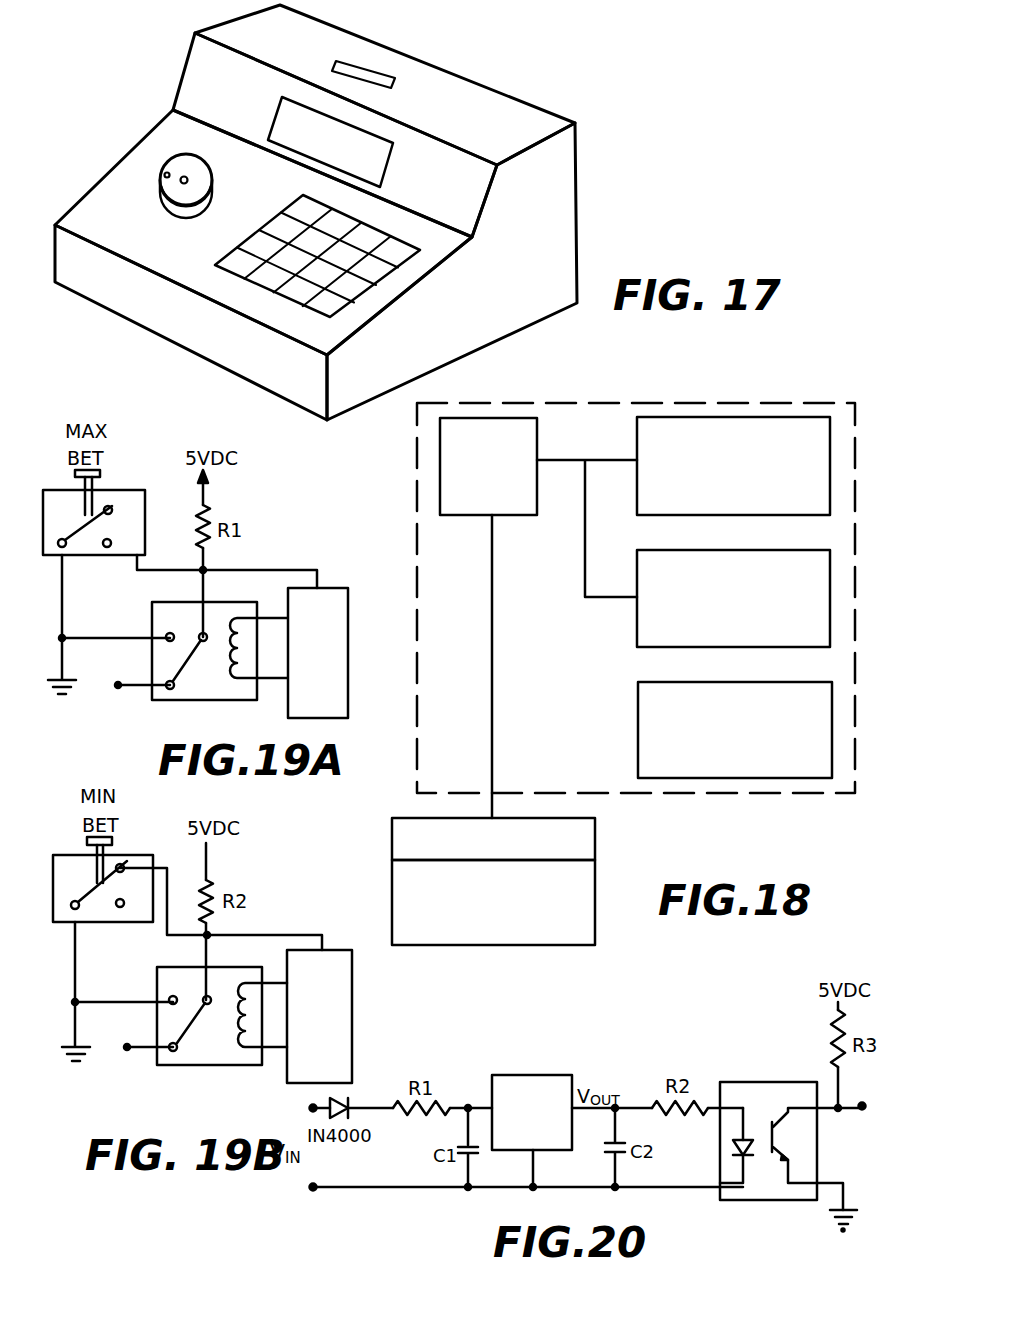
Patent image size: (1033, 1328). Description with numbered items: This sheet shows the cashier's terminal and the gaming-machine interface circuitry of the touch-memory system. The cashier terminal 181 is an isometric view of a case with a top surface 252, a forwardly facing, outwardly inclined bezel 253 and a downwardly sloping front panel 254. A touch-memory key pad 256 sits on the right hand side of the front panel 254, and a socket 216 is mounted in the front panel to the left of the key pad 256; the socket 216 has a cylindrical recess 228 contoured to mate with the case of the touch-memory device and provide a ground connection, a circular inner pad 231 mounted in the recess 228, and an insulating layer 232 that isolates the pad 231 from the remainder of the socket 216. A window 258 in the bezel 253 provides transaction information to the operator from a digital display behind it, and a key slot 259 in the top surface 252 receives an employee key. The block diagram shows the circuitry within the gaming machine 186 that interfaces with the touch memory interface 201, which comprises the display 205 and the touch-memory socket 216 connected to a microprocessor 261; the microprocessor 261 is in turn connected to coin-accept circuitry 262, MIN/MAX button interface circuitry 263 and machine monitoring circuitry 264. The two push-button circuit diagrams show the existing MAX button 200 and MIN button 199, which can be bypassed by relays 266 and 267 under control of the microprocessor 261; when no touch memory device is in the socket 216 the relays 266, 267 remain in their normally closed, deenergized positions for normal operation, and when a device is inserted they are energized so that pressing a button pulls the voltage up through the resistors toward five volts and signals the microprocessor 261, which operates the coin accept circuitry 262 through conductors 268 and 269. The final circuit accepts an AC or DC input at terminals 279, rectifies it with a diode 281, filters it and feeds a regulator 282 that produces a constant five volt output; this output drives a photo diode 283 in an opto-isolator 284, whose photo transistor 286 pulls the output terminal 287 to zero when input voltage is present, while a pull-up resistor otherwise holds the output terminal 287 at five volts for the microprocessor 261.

In FIG. 17, the cashier terminal 181 is at (593, 126).
In FIG. 17, the case top surface 252 is at (484, 97).
In FIG. 17, the front bezel 253 is at (477, 183).
In FIG. 17, the front panel 254 is at (403, 272).
In FIG. 17, the touch-memory key pad 256 is at (331, 303).
In FIG. 17, the window 258 is at (380, 160).
In FIG. 17, the key slot 259 is at (374, 73).
In FIG. 17, the touch-memory socket 216 is at (213, 186).
In FIG. 18, the touch-memory socket 216 is at (574, 934).
In FIG. 17, the cylindrical recess 228 is at (165, 177).
In FIG. 17, the circular inner pad 231 is at (181, 176).
In FIG. 17, the insulating layer 232 is at (165, 198).
In FIG. 18, the gaming machine 186 is at (733, 403).
In FIG. 18, the microprocessor 261 is at (532, 447).
In FIG. 19A, the microprocessor 261 is at (342, 702).
In FIG. 19B, the microprocessor 261 is at (342, 1074).
In FIG. 18, the coin-accept circuitry 262 is at (818, 454).
In FIG. 18, the MIN/MAX button interface circuitry 263 is at (826, 612).
In FIG. 18, the machine monitoring circuitry 264 is at (825, 739).
In FIG. 18, the touch memory interface 201 is at (384, 876).
In FIG. 18, the display 205 is at (587, 840).
In FIG. 19A, the MAX button 200 is at (100, 478).
In FIG. 19B, the MIN button 199 is at (112, 843).
In FIG. 19A, the relay 266 is at (195, 692).
In FIG. 19B, the relay 267 is at (177, 1067).
In FIG. 19A, the conductor 268 is at (130, 674).
In FIG. 19B, the conductor 269 is at (131, 1056).
In FIG. 20, the input terminals 279 is at (311, 1112).
In FIG. 20, the diode 281 is at (348, 1105).
In FIG. 20, the regulator 282 is at (557, 1144).
In FIG. 20, the photo diode 283 is at (731, 1152).
In FIG. 20, the opto-isolator 284 is at (737, 1201).
In FIG. 20, the photo transistor 286 is at (802, 1129).
In FIG. 20, the output terminal 287 is at (886, 1098).